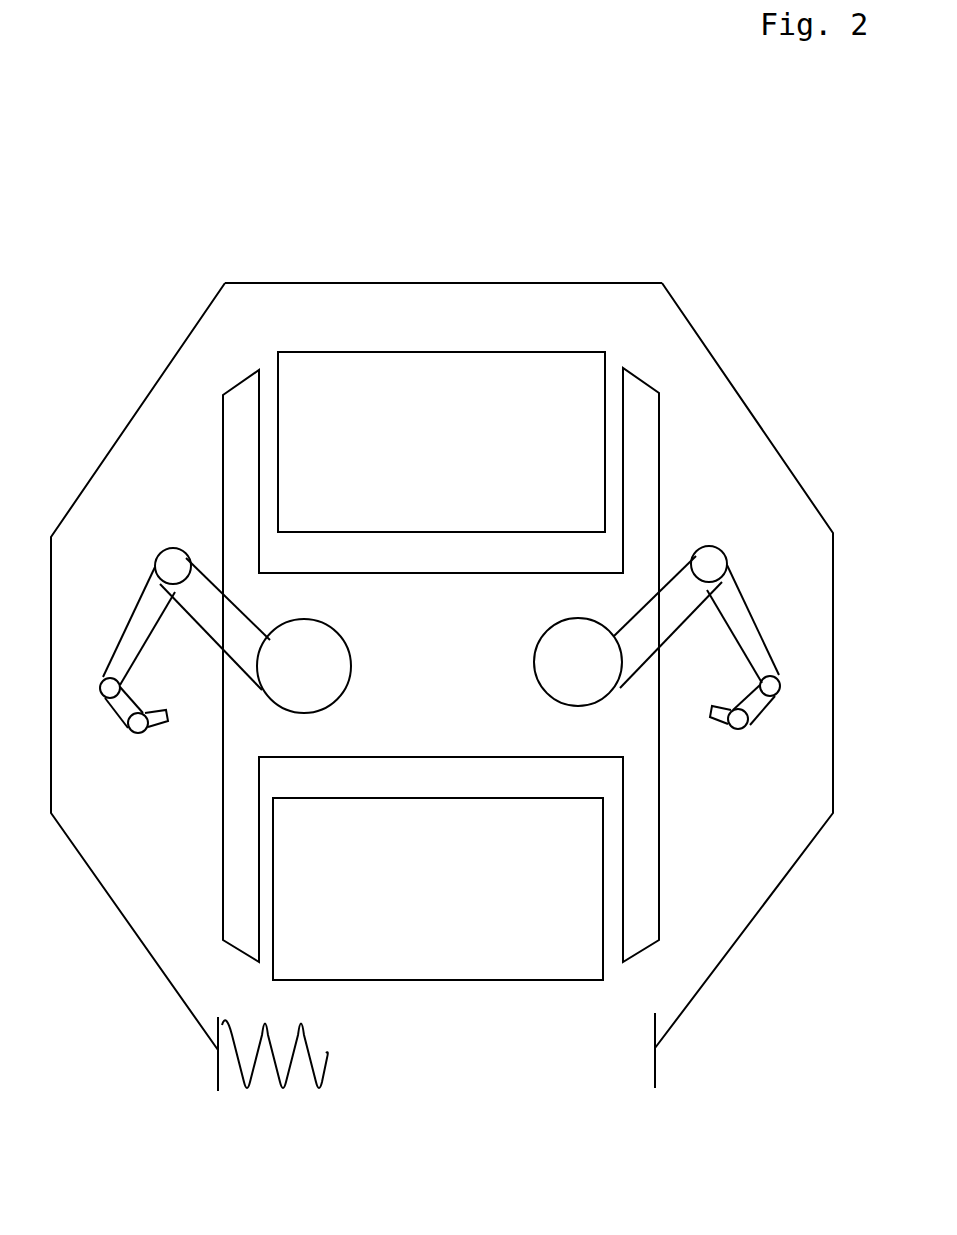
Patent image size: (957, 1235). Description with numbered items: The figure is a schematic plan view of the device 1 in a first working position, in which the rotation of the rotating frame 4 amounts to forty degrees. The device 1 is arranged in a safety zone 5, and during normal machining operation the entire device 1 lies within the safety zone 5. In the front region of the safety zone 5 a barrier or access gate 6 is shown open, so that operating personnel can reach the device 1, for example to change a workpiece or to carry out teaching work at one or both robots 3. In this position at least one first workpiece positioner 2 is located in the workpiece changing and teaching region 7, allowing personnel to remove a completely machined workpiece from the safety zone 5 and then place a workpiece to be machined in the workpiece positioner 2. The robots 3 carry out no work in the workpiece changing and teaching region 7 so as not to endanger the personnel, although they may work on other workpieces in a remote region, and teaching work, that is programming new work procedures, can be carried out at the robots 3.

The device 1 is at (397, 193).
The first workpiece positioner 2 is at (441, 665).
The robots 3 is at (270, 640).
The rotating frame 4 is at (439, 666).
The safety zone 5 is at (559, 282).
The barrier or access gate 6 is at (314, 1103).
The workpiece changing and teaching region 7 is at (436, 1052).